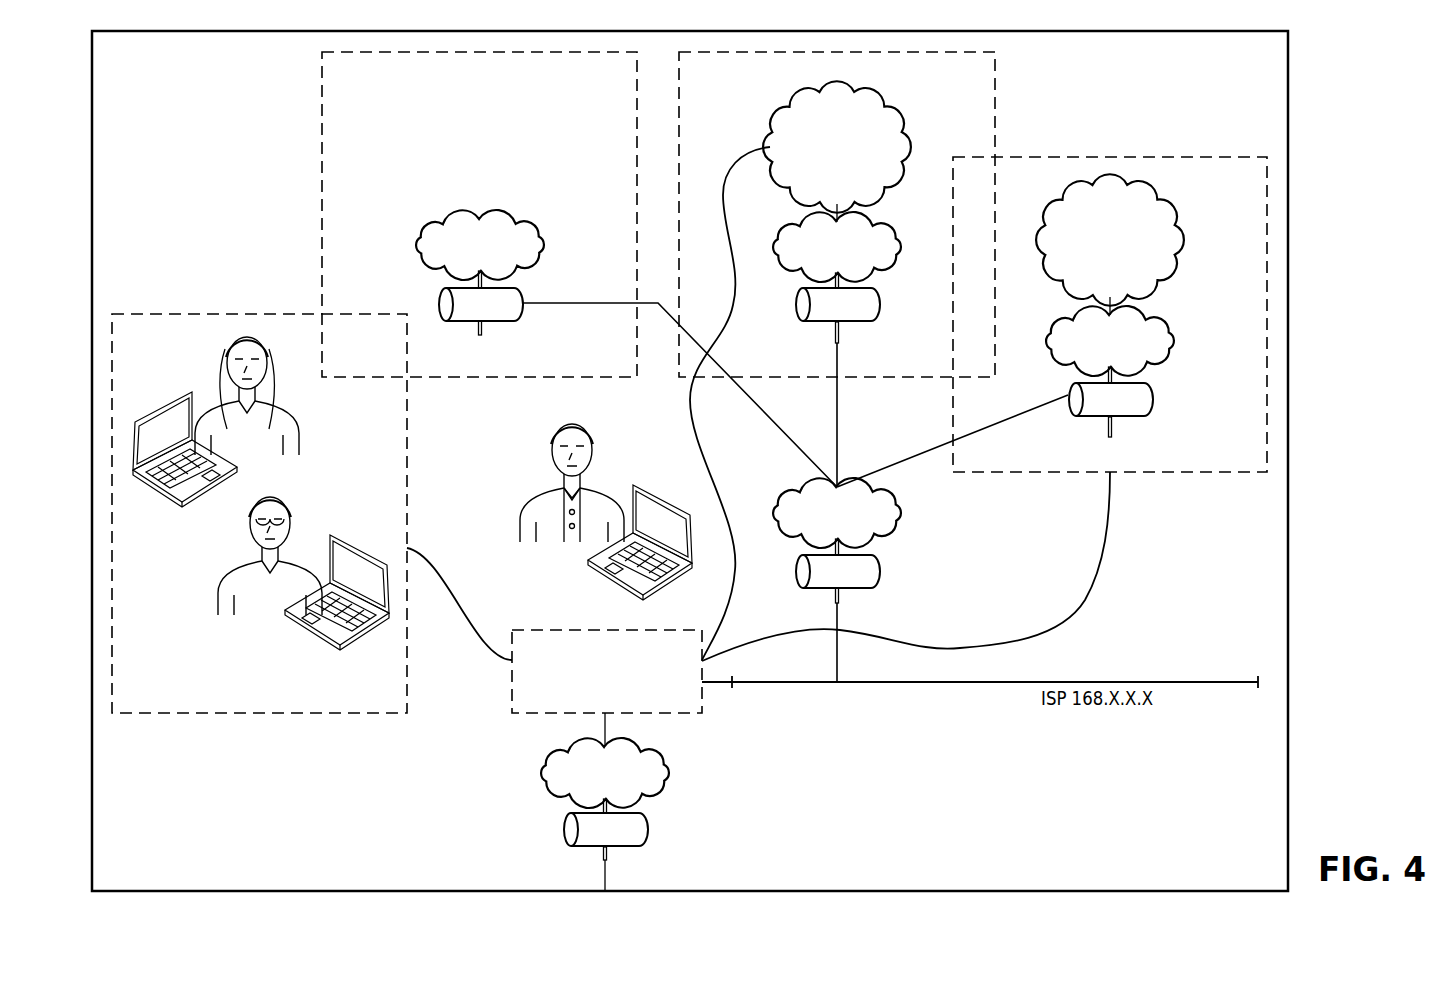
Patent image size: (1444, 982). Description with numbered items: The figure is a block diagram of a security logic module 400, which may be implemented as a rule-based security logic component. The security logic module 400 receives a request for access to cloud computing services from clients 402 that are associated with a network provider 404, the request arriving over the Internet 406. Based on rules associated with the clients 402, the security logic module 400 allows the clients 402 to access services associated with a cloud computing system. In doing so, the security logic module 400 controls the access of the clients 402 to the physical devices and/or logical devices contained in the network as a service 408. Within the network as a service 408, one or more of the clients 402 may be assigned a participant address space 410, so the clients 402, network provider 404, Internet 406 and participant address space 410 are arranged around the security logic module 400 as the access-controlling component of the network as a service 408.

The security logic module 400 is at (541, 630).
The clients 402 is at (247, 314).
The network provider 404 is at (904, 136).
The Internet 406 is at (1179, 233).
The network as a service 408 is at (228, 854).
The participant address space 410 is at (322, 206).